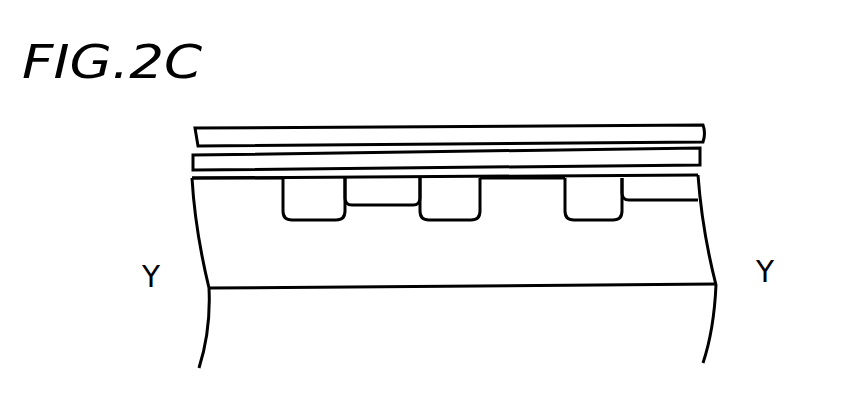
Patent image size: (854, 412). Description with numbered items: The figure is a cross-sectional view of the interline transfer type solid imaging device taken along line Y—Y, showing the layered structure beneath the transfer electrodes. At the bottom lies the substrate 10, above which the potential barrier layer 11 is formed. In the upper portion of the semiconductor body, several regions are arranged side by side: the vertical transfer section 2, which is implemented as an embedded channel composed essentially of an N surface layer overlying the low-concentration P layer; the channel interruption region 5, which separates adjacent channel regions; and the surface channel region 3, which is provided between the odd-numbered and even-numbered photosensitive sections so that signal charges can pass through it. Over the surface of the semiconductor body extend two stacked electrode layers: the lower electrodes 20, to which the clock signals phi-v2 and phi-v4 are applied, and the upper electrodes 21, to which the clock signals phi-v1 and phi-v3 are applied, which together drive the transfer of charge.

The vertical transfer section 2 is at (383, 190).
The surface channel region 3 is at (248, 195).
The channel interruption region 5 is at (323, 193).
The substrate 10 is at (454, 271).
The potential barrier layer 11 is at (462, 267).
The lower electrodes 20 is at (690, 156).
The upper electrodes 21 is at (686, 129).